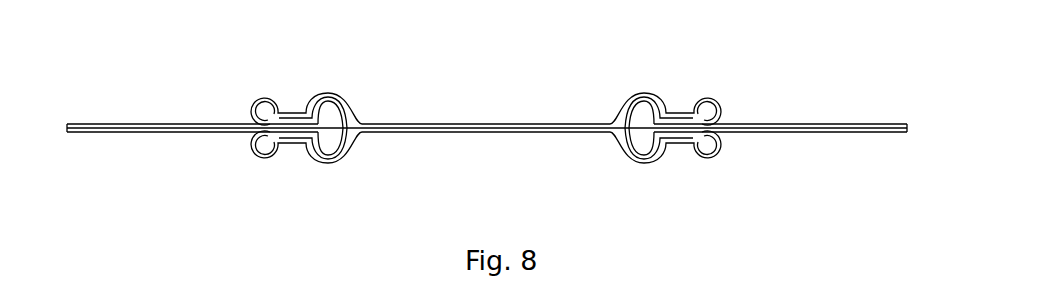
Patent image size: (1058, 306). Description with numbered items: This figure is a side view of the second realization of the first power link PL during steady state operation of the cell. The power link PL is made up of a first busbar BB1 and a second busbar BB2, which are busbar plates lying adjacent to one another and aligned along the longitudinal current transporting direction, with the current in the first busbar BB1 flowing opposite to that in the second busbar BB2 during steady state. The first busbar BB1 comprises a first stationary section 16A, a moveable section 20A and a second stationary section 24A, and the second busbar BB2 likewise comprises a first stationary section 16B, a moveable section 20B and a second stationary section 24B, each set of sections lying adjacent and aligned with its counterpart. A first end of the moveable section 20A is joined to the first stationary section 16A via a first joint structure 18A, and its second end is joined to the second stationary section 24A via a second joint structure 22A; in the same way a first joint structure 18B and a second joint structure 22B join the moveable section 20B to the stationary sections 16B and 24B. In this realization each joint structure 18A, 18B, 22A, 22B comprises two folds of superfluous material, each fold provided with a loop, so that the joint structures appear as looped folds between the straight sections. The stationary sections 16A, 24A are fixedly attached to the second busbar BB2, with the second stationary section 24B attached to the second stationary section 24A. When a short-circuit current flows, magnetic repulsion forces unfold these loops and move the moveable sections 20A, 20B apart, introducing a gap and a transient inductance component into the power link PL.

The power link PL is at (881, 71).
The first busbar BB1 is at (482, 81).
The second busbar BB2 is at (482, 169).
The first stationary section 16A is at (143, 124).
The first stationary section 16B is at (130, 133).
The first joint structure 18A is at (273, 100).
The first joint structure 18B is at (270, 158).
The moveable section 20A is at (412, 124).
The moveable section 20B is at (450, 133).
The second joint structure 22A is at (638, 98).
The second joint structure 22B is at (650, 160).
The second stationary section 24A is at (790, 124).
The second stationary section 24B is at (757, 133).